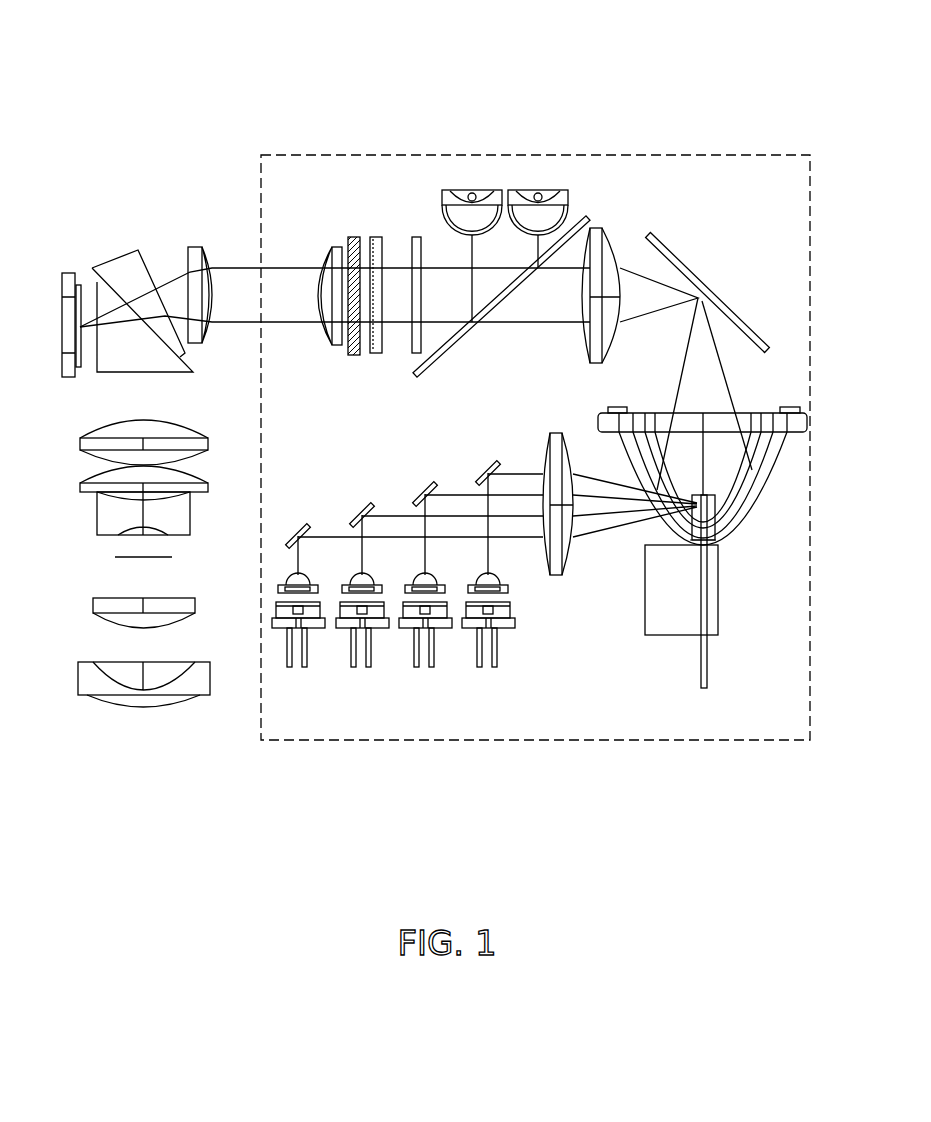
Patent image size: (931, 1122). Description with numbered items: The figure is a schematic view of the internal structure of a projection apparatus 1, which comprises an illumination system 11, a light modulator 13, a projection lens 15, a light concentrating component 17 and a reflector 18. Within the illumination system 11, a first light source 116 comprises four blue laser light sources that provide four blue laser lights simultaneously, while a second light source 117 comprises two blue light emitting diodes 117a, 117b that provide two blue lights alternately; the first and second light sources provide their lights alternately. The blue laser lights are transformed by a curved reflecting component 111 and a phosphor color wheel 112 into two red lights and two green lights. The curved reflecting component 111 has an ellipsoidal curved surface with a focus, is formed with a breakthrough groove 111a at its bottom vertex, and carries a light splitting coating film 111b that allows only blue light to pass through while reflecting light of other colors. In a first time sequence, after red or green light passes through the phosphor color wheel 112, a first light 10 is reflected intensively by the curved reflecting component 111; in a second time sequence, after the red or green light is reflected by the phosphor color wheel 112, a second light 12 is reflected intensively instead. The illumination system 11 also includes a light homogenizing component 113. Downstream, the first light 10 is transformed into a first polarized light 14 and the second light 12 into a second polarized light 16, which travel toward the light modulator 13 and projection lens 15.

The projection apparatus 1 is at (138, 41).
The first light 10 is at (730, 378).
The illumination system 11 is at (640, 154).
The second light 12 is at (685, 380).
The light modulator 13 is at (80, 287).
The first polarized light 14 is at (232, 270).
The projection lens 15 is at (85, 677).
The second polarized light 16 is at (236, 318).
The light concentrating component 17 is at (552, 571).
The reflector 18 is at (741, 327).
The curved reflecting component 111 is at (730, 496).
The breakthrough groove 111a is at (724, 546).
The light splitting coating film 111b is at (777, 445).
The phosphor color wheel 112 is at (702, 666).
The light homogenizing component 113 is at (370, 234).
The first light source 116 is at (515, 668).
The second light source 117 is at (503, 203).
The blue light emitting diode 117a is at (538, 193).
The blue light emitting diode 117b is at (462, 198).